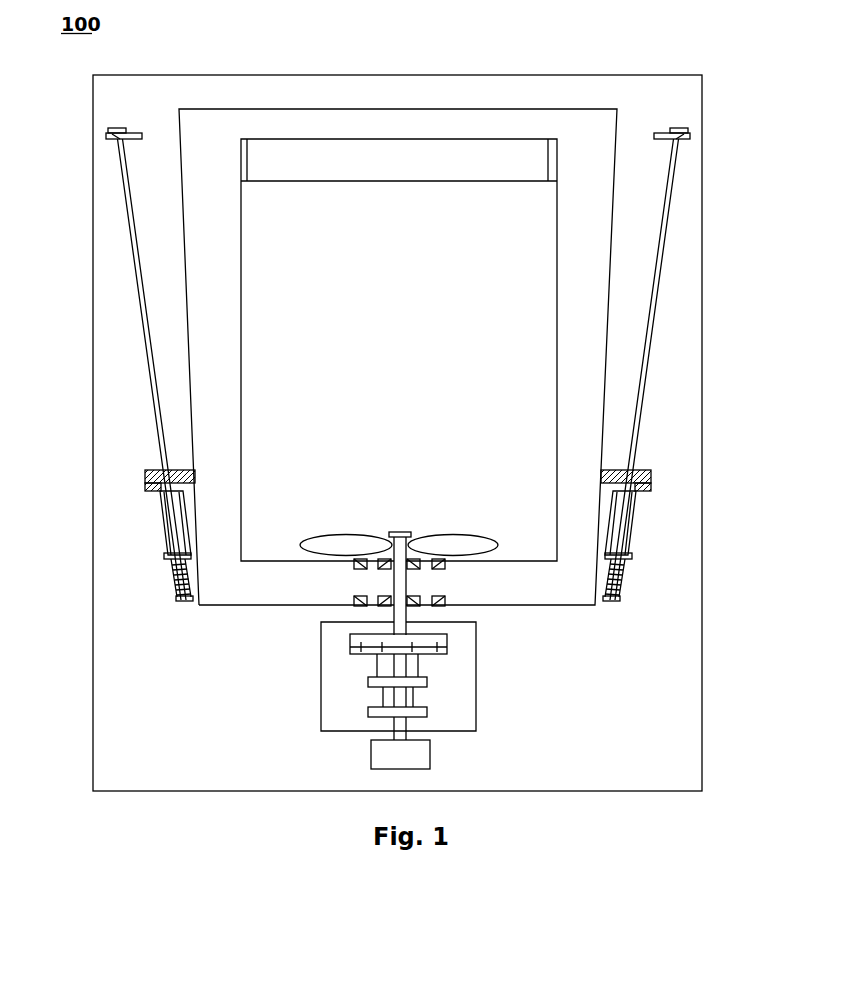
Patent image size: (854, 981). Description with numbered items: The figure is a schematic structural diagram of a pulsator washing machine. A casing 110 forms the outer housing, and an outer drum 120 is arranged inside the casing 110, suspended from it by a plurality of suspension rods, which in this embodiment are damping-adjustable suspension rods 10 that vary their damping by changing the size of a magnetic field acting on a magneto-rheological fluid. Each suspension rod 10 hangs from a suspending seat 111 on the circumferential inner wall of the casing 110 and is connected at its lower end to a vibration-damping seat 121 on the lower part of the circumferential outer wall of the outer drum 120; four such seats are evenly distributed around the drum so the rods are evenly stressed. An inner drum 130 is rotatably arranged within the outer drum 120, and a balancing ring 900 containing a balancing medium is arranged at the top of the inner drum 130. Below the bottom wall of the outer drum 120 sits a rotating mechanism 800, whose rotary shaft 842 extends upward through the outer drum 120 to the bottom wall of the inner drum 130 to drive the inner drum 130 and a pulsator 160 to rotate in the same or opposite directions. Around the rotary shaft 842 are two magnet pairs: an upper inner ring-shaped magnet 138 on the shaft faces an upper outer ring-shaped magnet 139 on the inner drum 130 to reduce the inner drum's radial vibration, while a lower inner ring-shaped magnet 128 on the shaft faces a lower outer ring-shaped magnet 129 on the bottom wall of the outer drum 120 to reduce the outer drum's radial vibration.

The casing 110 is at (92, 423).
The outer drum 120 is at (348, 108).
The inner drum 130 is at (245, 363).
The balancing ring 900 is at (452, 172).
The suspending seat 111 is at (110, 136).
The damping-adjustable suspension rod 10 is at (135, 267).
The vibration-damping seat 121 is at (158, 483).
The pulsator 160 is at (363, 538).
The rotary shaft 842 is at (407, 580).
The upper inner ring-shaped magnet 138 is at (388, 563).
The upper outer ring-shaped magnet 139 is at (445, 563).
The lower inner ring-shaped magnet 128 is at (388, 603).
The lower outer ring-shaped magnet 129 is at (443, 600).
The rotating mechanism 800 is at (443, 741).